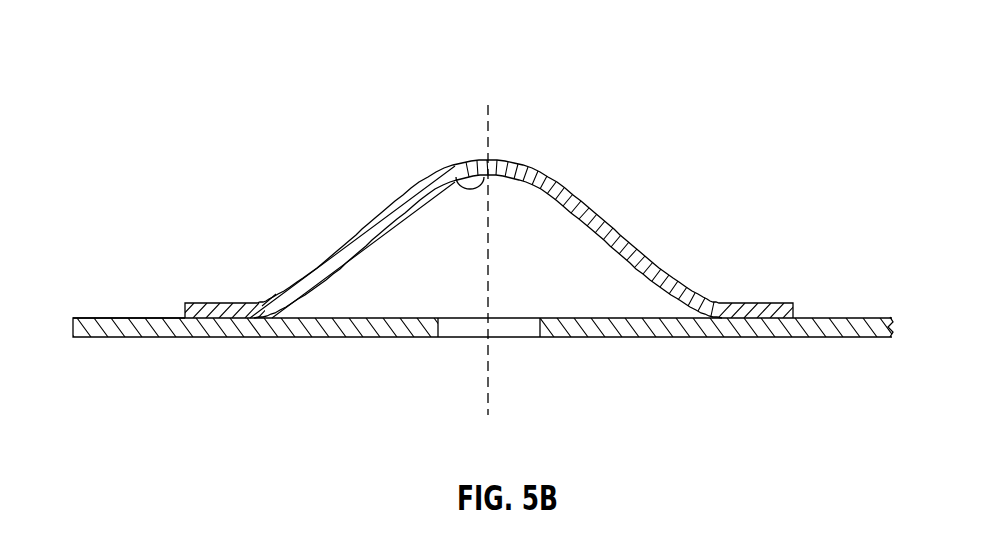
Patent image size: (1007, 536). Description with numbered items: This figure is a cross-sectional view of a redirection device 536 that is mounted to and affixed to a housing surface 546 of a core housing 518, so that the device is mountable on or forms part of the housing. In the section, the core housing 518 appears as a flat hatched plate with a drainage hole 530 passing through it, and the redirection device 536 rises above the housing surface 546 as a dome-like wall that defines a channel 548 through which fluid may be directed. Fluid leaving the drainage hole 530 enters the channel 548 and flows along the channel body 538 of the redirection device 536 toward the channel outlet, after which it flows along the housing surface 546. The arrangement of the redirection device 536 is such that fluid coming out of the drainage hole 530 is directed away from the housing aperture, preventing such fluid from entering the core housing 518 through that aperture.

The core housing 518 is at (782, 338).
The drainage hole 530 is at (467, 336).
The redirection device 536 is at (510, 160).
The channel body 538 is at (480, 161).
The housing surface 546 is at (106, 318).
The channel 548 is at (568, 299).